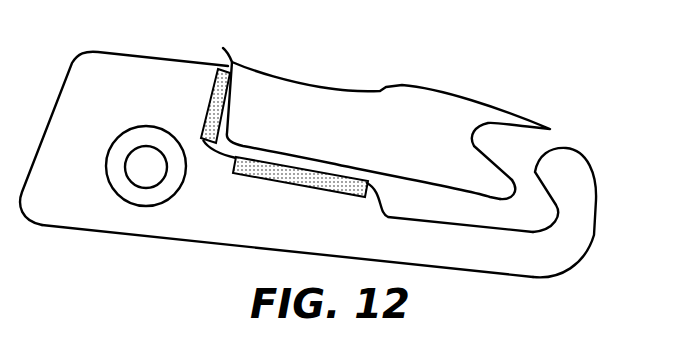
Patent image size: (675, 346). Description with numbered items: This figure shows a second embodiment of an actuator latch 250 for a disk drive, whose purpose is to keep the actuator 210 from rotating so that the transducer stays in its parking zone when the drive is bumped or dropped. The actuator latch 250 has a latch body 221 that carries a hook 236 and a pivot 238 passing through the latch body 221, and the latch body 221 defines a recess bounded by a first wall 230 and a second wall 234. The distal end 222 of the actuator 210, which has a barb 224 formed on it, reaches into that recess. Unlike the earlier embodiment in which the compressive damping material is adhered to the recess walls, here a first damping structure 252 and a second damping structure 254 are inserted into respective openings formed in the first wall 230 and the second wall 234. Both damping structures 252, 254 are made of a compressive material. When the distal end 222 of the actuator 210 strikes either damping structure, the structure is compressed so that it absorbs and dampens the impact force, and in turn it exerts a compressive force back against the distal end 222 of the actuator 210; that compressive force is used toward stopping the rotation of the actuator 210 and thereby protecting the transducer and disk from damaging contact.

The actuator 210 is at (386, 131).
The latch body 221 is at (200, 222).
The distal end 222 is at (322, 102).
The barb 224 is at (484, 203).
The first wall 230 is at (257, 151).
The second wall 234 is at (300, 197).
The hook 236 is at (572, 148).
The pivot 238 is at (124, 128).
The actuator latch 250 is at (141, 54).
The first damping structure 252 is at (206, 110).
The second damping structure 254 is at (274, 183).